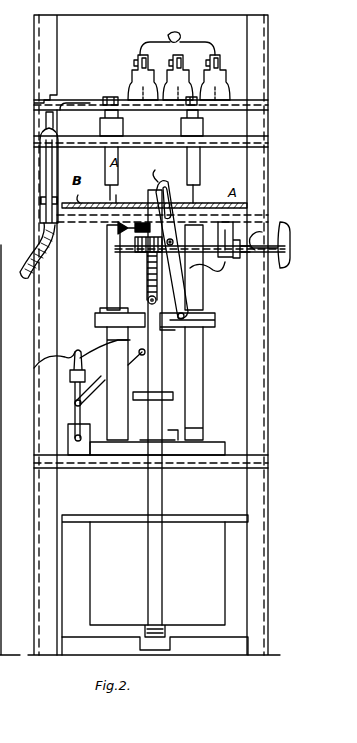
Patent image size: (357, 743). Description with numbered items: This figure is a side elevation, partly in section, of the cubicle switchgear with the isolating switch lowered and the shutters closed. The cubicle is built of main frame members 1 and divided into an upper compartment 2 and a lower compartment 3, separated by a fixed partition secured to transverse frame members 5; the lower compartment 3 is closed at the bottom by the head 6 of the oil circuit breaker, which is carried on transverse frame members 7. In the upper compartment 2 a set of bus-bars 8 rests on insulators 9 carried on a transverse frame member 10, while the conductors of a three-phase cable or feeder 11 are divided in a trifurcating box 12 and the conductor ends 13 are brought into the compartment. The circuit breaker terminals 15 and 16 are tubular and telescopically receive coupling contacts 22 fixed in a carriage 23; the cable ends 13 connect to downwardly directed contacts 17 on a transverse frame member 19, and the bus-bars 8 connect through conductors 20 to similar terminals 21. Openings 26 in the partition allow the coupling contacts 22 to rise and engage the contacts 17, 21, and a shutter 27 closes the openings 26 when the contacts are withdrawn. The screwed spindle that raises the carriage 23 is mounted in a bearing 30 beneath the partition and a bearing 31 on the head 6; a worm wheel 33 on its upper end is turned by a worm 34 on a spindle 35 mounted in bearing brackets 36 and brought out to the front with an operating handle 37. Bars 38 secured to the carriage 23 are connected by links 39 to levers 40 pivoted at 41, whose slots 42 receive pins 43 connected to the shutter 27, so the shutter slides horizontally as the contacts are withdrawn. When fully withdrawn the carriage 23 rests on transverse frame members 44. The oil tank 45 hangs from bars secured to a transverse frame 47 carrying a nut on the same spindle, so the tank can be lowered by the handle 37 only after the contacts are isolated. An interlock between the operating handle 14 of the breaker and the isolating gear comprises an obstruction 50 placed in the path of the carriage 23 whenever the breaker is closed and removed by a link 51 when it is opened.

The main frame members 1 is at (0, 400).
The upper compartment 2 is at (106, 58).
The lower compartment 3 is at (226, 388).
The transverse frame members 5 is at (245, 250).
The head of the oil circuit breaker 6 is at (212, 460).
The transverse frame members 7 is at (130, 475).
The bus-bars 8 is at (177, 41).
The insulators 9 is at (234, 66).
The transverse frame member 10 is at (228, 108).
The three-phase cable or feeder 11 is at (26, 252).
The trifurcating box 12 is at (60, 170).
The conductor ends 13 is at (55, 118).
The operating handle 14 is at (46, 363).
The circuit breaker terminal 15 is at (200, 412).
The circuit breaker terminal 16 is at (106, 400).
The downwardly directed contacts 17 is at (126, 188).
The transverse frame member 19 is at (222, 148).
The conductors 20 is at (150, 112).
The terminals 21 is at (195, 190).
The coupling contacts 22 is at (104, 285).
The carriage 23 is at (215, 316).
The openings 26 is at (200, 265).
The shutter 27 is at (118, 194).
The bearing 30 is at (132, 228).
The bearing 31 is at (168, 400).
The worm wheel 33 is at (146, 280).
The worm 34 is at (140, 252).
The spindle 35 is at (273, 222).
The bearing brackets 36 is at (90, 262).
The operating handle 37 is at (286, 270).
The bars 38 is at (148, 360).
The links 39 is at (146, 302).
The levers 40 is at (180, 275).
The pivot 41 is at (155, 347).
The slots 42 is at (158, 170).
The pins 43 is at (168, 175).
The transverse frame members 44 is at (236, 358).
The oil tank 45 is at (188, 568).
The transverse frame 47 is at (172, 392).
The obstruction 50 is at (125, 335).
The link 51 is at (100, 372).